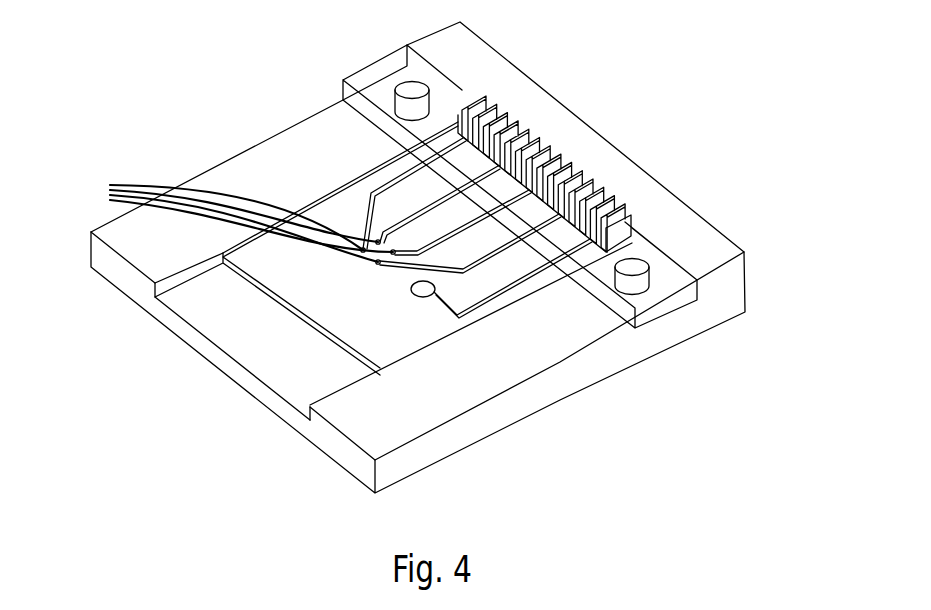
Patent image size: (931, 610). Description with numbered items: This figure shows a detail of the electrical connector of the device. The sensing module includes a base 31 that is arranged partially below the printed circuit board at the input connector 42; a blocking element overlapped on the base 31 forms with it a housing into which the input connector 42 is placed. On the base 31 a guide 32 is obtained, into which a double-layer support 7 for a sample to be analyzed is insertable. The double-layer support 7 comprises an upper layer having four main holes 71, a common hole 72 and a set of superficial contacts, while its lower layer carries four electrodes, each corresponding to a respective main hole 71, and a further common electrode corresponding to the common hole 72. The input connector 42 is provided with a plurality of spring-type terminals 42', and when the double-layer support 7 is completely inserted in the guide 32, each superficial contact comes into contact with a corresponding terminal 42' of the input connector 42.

The base 31 is at (436, 457).
The guide 32 is at (205, 303).
The double-layer support 7 is at (322, 318).
The main holes 71 is at (239, 220).
The common hole 72 is at (437, 292).
The input connector 42 is at (552, 206).
The terminals 42' is at (603, 174).